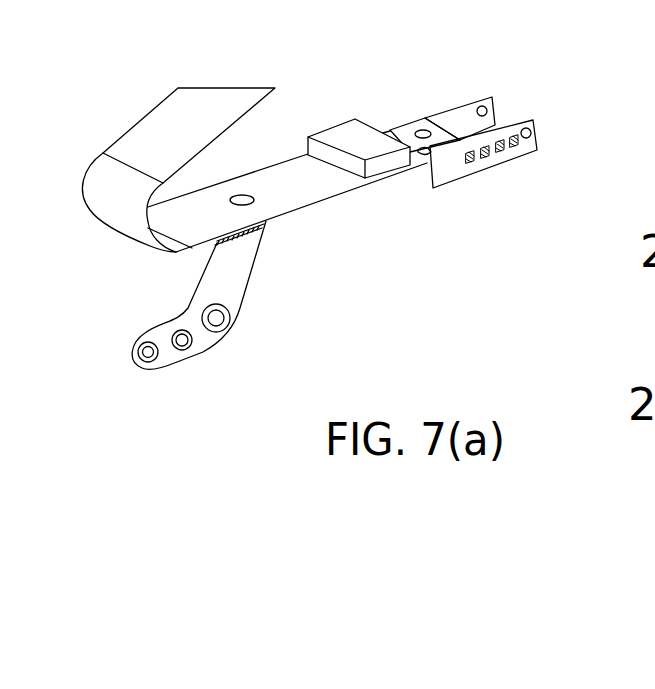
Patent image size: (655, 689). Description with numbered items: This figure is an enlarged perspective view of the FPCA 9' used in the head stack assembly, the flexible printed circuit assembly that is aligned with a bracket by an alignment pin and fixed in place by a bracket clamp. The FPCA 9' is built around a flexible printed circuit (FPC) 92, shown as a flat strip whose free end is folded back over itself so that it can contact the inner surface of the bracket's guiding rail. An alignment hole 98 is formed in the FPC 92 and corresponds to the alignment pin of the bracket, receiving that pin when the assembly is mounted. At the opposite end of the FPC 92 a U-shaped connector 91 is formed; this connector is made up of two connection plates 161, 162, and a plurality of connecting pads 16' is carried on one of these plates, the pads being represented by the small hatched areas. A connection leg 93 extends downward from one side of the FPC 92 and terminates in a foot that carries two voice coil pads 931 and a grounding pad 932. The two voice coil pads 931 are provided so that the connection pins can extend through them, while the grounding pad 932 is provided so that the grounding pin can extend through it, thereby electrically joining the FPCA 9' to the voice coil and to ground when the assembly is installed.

The FPCA 9' is at (360, 237).
The U-shaped connector 91 is at (437, 142).
The flexible printed circuit 92 is at (193, 115).
The connection leg 93 is at (171, 347).
The voice coil pads 931 is at (147, 362).
The grounding pad 932 is at (218, 332).
The alignment hole 98 is at (254, 198).
The connecting pads 16' is at (535, 152).
The connection plate 161 is at (510, 142).
The connection plate 162 is at (462, 103).